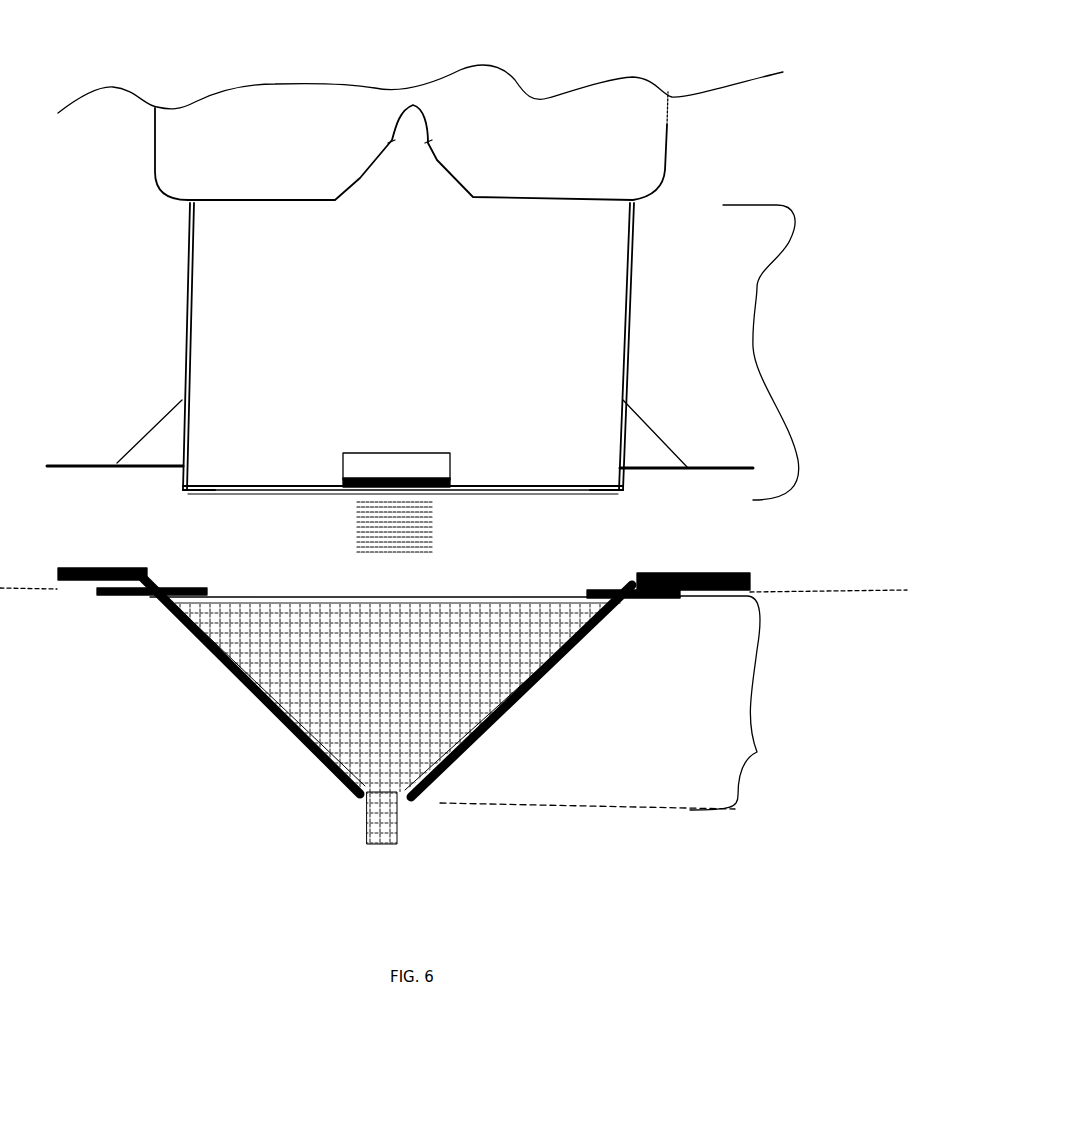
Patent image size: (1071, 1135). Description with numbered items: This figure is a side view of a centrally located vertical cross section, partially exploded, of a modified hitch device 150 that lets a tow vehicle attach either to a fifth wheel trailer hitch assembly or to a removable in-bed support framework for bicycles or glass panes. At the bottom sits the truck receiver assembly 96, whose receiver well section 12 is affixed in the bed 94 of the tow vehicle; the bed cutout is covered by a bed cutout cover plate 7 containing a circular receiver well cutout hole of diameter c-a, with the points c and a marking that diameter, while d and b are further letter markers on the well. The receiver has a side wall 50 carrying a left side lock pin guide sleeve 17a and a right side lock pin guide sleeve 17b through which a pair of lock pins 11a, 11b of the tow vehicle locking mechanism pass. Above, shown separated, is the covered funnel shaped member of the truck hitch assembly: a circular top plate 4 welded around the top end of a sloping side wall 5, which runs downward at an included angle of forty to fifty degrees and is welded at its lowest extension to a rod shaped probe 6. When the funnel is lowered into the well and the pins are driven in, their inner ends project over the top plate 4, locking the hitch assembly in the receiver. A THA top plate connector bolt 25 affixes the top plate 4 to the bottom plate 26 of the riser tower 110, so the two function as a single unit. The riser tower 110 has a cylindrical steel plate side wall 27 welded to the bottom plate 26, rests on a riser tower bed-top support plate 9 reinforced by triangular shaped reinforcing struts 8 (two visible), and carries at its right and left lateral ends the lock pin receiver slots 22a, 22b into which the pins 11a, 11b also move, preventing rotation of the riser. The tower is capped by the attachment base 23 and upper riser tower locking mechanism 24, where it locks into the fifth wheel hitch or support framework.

The modified hitch device 150 is at (356, 38).
The upper riser tower locking mechanism 24 is at (405, 148).
The attachment base 23 is at (655, 124).
The riser tower 110 is at (763, 352).
The cylindrical steel plate side wall 27 is at (185, 293).
The triangular shaped reinforcing struts 8 is at (153, 422).
The riser tower bed-top support plate 9 is at (153, 470).
The bottom plate 26 is at (270, 474).
The THA top plate connector bolt 25 is at (460, 466).
The riser tower lock pin receiver slot 22a is at (206, 496).
The riser tower lock pin receiver slot 22b is at (612, 499).
The bed cutout cover plate 7 is at (89, 561).
The left side lock pin guide sleeve 17a is at (110, 601).
The right side lock pin guide sleeve 17b is at (647, 606).
The circular top plate 4 is at (498, 587).
The side wall 50 is at (212, 661).
The receiver well section 12 is at (337, 657).
The side wall 5 is at (318, 742).
The rod shaped probe 6 is at (410, 836).
The receiver well cutout hole diameter endpoint c is at (144, 571).
The receiver well cutout hole diameter endpoint a is at (640, 588).
The point d is at (360, 793).
The point b is at (416, 802).
The lock pin 11a is at (202, 576).
The lock pin 11b is at (608, 588).
The bed 94 is at (19, 596).
The truck receiver assembly 96 is at (625, 703).